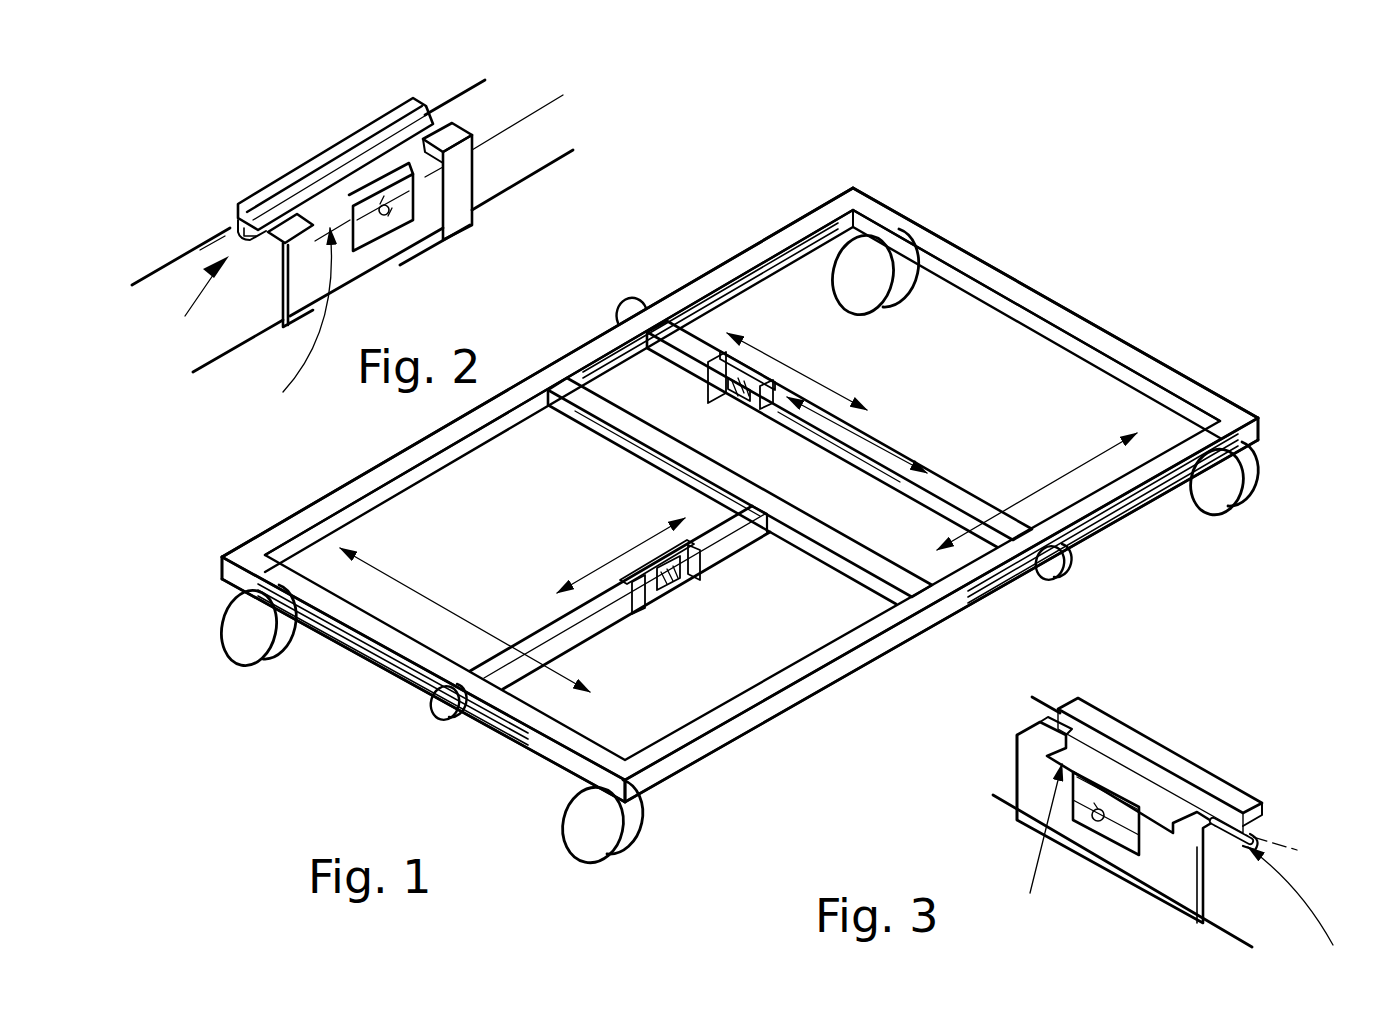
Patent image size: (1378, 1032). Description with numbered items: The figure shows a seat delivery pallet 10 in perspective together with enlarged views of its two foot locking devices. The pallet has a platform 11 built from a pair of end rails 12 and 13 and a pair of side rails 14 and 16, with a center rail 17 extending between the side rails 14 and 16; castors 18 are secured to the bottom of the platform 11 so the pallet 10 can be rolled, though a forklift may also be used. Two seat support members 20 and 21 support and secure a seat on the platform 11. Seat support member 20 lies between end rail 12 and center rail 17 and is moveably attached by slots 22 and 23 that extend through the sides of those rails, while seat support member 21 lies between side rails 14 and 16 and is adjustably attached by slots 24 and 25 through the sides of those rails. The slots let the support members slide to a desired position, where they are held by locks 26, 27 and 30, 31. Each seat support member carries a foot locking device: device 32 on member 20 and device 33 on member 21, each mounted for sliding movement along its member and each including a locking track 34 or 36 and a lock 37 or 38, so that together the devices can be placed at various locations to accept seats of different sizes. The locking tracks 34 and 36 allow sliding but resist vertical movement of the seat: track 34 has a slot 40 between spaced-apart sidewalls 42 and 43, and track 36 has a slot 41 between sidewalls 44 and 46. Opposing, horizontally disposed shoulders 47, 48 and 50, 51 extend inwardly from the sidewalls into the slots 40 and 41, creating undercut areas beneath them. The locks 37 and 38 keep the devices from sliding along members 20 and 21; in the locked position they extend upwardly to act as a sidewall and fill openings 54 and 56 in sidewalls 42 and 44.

In FIG. 1, the seat delivery pallet 10 is at (1073, 212).
In FIG. 1, the platform 11 is at (771, 732).
In FIG. 1, the end rail 12 is at (563, 737).
In FIG. 1, the end rail 13 is at (1073, 322).
In FIG. 1, the side rail 14 is at (770, 240).
In FIG. 1, the side rail 16 is at (835, 650).
In FIG. 1, the center rail 17 is at (580, 427).
In FIG. 1, the castors 18 is at (243, 633).
In FIG. 1, the seat support member 20 is at (593, 617).
In FIG. 2, the seat support member 20 is at (205, 345).
In FIG. 1, the seat support member 21 is at (940, 487).
In FIG. 3, the seat support member 21 is at (1227, 907).
In FIG. 1, the slot 22 is at (347, 657).
In FIG. 1, the slot 23 is at (643, 460).
In FIG. 1, the slot 24 is at (757, 288).
In FIG. 1, the slot 25 is at (1130, 513).
In FIG. 1, the lock 26 is at (440, 703).
In FIG. 1, the lock 27 is at (962, 473).
In FIG. 1, the lock 30 is at (626, 305).
In FIG. 1, the lock 31 is at (1052, 572).
In FIG. 1, the foot locking device 32 is at (653, 600).
In FIG. 2, the foot locking device 32 is at (300, 325).
In FIG. 1, the foot locking device 33 is at (763, 400).
In FIG. 3, the foot locking device 33 is at (1028, 813).
In FIG. 1, the locking track 34 is at (627, 592).
In FIG. 2, the locking track 34 is at (232, 224).
In FIG. 1, the locking track 36 is at (878, 455).
In FIG. 3, the locking track 36 is at (1302, 911).
In FIG. 1, the lock 37 is at (687, 578).
In FIG. 2, the lock 37 is at (415, 216).
In FIG. 1, the lock 38 is at (727, 390).
In FIG. 3, the lock 38 is at (1120, 840).
In FIG. 2, the slot 40 is at (240, 246).
In FIG. 3, the slot 41 is at (1240, 842).
In FIG. 2, the sidewall 42 is at (472, 147).
In FIG. 2, the sidewall 43 is at (221, 207).
In FIG. 3, the sidewall 44 is at (1023, 753).
In FIG. 3, the sidewall 46 is at (1263, 812).
In FIG. 2, the shoulder 47 is at (463, 133).
In FIG. 2, the shoulder 48 is at (370, 122).
In FIG. 3, the shoulder 50 is at (1040, 728).
In FIG. 3, the shoulder 51 is at (1095, 722).
In FIG. 2, the opening 54 is at (299, 325).
In FIG. 3, the opening 56 is at (1035, 846).